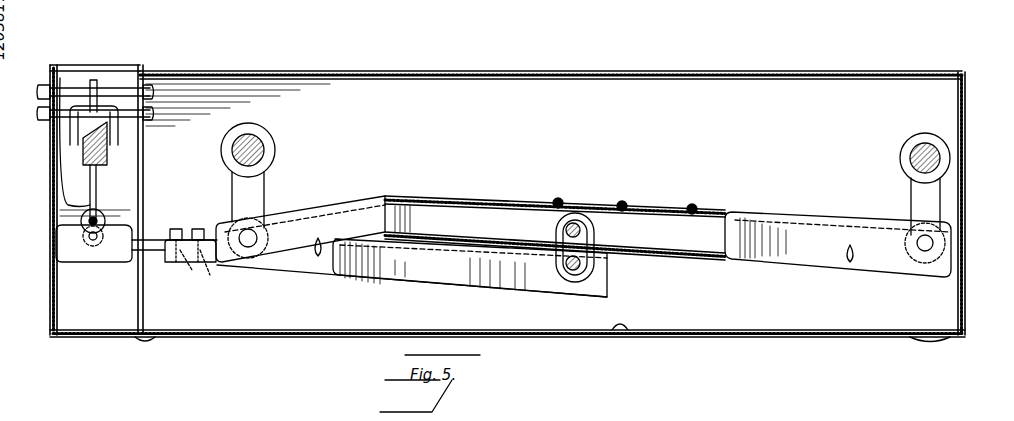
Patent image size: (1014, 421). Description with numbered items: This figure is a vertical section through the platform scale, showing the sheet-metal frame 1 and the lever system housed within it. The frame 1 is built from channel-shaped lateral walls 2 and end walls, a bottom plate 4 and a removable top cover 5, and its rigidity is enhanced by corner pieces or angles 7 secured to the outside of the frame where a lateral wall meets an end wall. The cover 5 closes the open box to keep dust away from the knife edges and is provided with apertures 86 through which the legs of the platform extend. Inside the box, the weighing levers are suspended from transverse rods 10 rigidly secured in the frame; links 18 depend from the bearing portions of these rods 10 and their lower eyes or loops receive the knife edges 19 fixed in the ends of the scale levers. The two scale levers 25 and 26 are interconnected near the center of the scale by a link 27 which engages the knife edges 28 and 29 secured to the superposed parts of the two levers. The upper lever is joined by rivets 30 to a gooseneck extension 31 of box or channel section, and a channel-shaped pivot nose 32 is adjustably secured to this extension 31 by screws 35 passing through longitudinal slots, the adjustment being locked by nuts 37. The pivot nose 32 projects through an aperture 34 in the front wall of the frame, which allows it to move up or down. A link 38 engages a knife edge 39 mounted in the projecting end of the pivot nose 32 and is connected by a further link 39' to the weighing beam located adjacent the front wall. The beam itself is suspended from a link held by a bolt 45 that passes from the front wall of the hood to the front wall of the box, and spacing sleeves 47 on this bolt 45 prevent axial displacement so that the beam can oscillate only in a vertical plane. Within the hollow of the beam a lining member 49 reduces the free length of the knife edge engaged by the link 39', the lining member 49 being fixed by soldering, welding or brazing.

The frame 1 is at (790, 337).
The lateral walls 2 is at (965, 198).
The bottom plate 4 is at (628, 330).
The removable top cover 5 is at (575, 71).
The corner pieces or angles 7 is at (965, 300).
The rods 10 is at (262, 140).
The links 18 is at (266, 196).
The knife edges 19 is at (933, 242).
The scale lever 25 is at (778, 212).
The scale lever 26 is at (440, 292).
The link 27 is at (594, 238).
The knife edge 28 is at (578, 224).
The knife edge 29 is at (582, 266).
The rivets 30 is at (696, 206).
The gooseneck extension 31 is at (213, 222).
The pivot nose 32 is at (120, 265).
The aperture 34 is at (140, 268).
The screws 35 is at (190, 261).
The nuts 37 is at (178, 228).
The link 38 is at (80, 216).
The knife edge 39 is at (56, 246).
The link 39' is at (97, 142).
The bolt 45 is at (152, 114).
The sleeves 47 is at (155, 92).
The lining member 49 is at (90, 165).
The apertures 86 is at (310, 71).